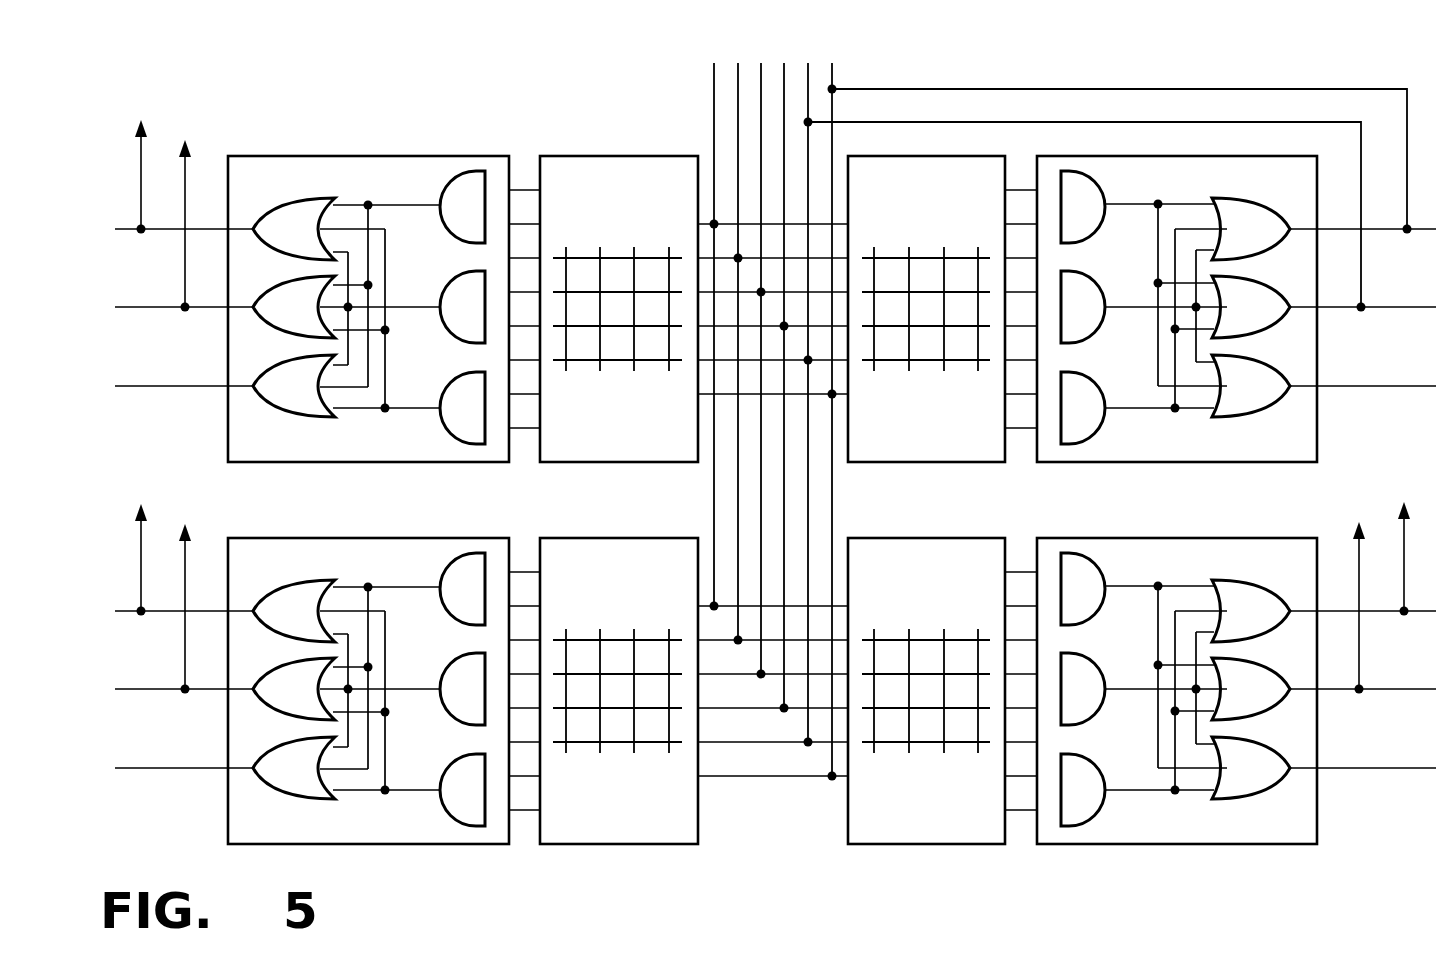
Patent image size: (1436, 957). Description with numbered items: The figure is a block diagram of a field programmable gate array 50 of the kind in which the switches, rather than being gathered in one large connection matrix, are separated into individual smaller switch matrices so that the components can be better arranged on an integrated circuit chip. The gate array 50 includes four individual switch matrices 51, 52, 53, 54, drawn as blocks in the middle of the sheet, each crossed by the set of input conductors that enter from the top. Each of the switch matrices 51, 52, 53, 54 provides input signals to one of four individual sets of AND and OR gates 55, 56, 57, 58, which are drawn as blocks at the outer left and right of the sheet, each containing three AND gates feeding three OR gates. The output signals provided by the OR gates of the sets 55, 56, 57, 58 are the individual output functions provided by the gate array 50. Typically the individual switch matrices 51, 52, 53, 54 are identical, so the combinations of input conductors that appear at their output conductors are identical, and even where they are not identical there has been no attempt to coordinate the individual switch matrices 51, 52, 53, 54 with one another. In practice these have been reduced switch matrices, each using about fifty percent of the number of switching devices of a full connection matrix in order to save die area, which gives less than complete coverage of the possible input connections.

The gate array 50 is at (274, 88).
The switch matrix 51 is at (689, 456).
The switch matrix 52 is at (689, 838).
The switch matrix 53 is at (997, 456).
The switch matrix 54 is at (997, 838).
The set of AND and OR gates 55 is at (255, 456).
The set of AND and OR gates 56 is at (255, 838).
The set of AND and OR gates 57 is at (1309, 456).
The set of AND and OR gates 58 is at (1309, 838).